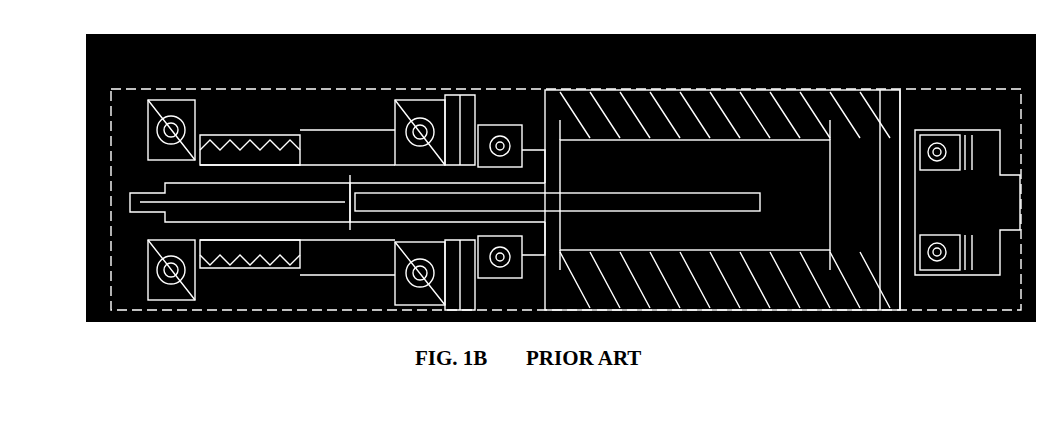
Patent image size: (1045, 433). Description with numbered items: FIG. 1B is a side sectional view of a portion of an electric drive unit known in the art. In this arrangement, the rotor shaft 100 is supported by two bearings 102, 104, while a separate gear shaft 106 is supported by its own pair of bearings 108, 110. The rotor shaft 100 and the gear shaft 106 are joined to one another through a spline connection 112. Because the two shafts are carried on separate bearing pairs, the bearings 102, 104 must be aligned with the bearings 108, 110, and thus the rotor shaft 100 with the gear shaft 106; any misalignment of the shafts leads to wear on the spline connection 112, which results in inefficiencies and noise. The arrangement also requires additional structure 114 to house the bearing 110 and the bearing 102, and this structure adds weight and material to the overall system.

The rotor shaft 100 is at (639, 130).
The bearing 102 is at (500, 102).
The bearing 104 is at (946, 110).
The gear shaft 106 is at (236, 145).
The bearing 108 is at (165, 104).
The bearing 110 is at (405, 104).
The spline connection 112 is at (332, 172).
The additional structure 114 is at (456, 104).